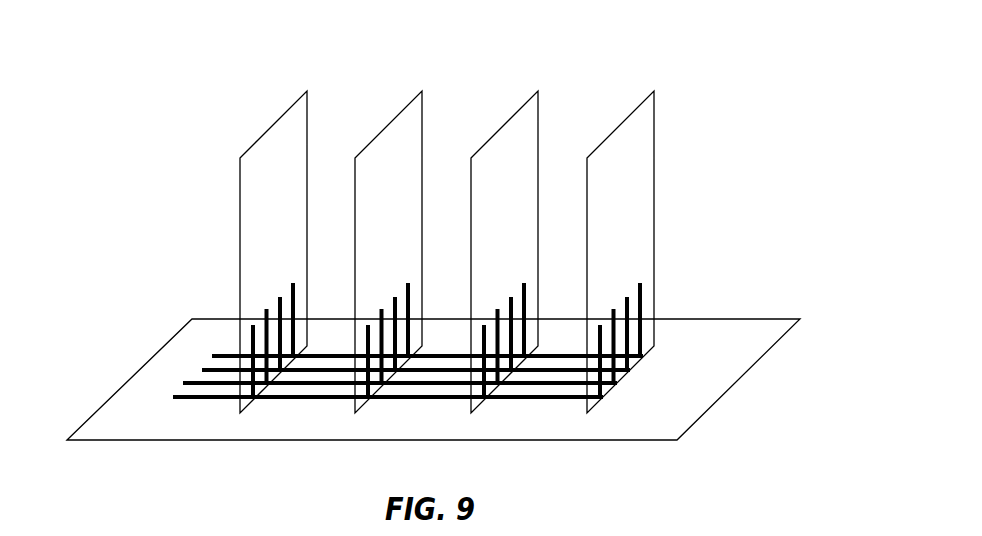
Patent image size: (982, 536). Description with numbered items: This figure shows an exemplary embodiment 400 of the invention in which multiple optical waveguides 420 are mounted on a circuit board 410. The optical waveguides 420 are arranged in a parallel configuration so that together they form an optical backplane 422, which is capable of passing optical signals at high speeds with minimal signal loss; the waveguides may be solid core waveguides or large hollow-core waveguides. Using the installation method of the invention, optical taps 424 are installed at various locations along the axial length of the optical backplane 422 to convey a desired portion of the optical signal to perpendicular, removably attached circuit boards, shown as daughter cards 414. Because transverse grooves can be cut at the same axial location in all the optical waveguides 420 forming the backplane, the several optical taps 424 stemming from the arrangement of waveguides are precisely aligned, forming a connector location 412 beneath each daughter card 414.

The exemplary embodiment 400 is at (140, 113).
The circuit board 410 is at (770, 352).
The connector location 412 is at (627, 377).
The daughter cards 414 is at (653, 216).
The optical waveguides 420 is at (223, 354).
The optical backplane 422 is at (203, 354).
The optical taps 424 is at (253, 338).